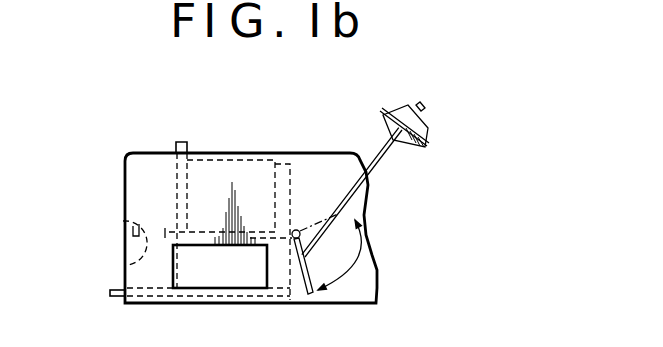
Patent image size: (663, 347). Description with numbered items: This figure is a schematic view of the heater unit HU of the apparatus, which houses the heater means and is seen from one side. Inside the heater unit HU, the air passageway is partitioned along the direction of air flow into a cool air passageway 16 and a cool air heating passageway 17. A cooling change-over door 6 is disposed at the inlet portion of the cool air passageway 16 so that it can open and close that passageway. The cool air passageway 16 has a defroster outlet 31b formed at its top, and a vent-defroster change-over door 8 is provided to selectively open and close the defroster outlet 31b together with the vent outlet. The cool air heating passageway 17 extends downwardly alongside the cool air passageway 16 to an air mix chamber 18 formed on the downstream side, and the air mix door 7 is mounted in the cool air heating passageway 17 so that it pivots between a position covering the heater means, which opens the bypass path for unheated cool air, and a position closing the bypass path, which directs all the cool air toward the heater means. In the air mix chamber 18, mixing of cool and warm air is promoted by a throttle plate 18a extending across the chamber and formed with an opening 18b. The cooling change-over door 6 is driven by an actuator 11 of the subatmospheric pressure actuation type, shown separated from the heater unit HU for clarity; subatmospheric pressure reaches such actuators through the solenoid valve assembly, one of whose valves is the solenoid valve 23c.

The heater unit HU is at (162, 148).
The air mix door 7 is at (242, 170).
The cool air heating passageway 17 is at (291, 192).
The defroster outlet 31b is at (226, 267).
The vent-defroster change-over door 8 is at (193, 290).
The cool air passageway 16 is at (291, 300).
The air mix chamber 18 is at (143, 199).
The throttle plate 18a is at (123, 220).
The opening 18b is at (127, 263).
The cooling change-over door 6 is at (307, 271).
The actuator 11 is at (428, 134).
The solenoid valve 23c is at (424, 105).